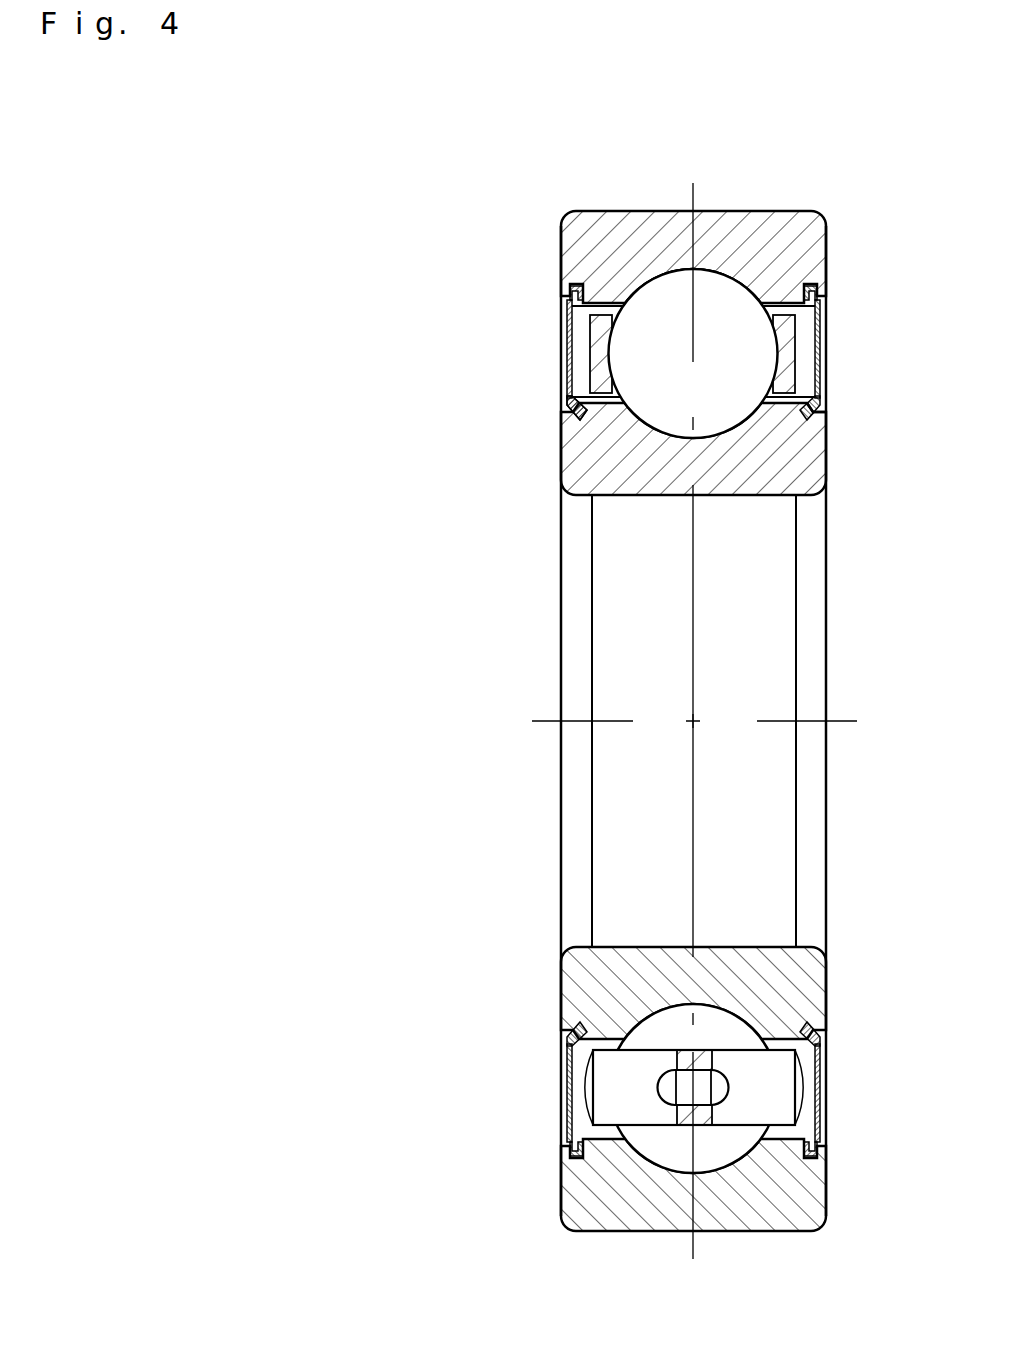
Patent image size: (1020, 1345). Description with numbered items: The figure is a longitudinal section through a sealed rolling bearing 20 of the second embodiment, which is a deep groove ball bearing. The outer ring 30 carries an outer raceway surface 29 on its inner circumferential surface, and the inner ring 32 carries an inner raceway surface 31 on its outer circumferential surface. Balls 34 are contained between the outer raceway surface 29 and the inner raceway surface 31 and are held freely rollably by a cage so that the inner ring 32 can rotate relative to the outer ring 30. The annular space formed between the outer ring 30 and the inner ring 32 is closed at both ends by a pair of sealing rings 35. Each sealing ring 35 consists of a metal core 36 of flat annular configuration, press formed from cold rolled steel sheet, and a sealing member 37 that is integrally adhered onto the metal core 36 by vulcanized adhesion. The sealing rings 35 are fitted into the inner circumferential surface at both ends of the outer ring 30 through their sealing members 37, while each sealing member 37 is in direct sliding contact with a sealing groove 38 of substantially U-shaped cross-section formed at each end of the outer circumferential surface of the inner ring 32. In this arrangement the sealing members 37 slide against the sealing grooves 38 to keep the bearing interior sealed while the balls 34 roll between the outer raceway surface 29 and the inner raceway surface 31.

The sealed rolling bearing 20 is at (512, 254).
The outer raceway surface 29 is at (684, 286).
The outer ring 30 is at (805, 247).
The inner raceway surface 31 is at (652, 417).
The inner ring 32 is at (785, 455).
The balls 34 is at (572, 390).
The sealing rings 35 is at (560, 292).
The metal core 36 is at (823, 337).
The sealing member 37 is at (823, 388).
The sealing groove 38 is at (812, 420).